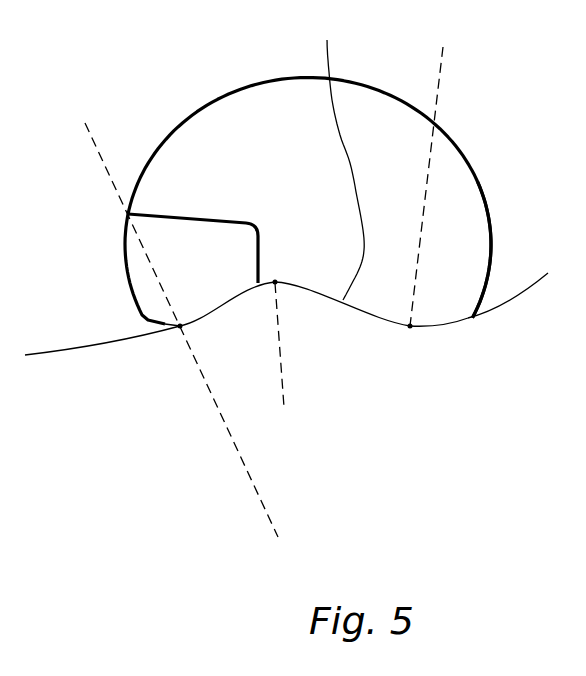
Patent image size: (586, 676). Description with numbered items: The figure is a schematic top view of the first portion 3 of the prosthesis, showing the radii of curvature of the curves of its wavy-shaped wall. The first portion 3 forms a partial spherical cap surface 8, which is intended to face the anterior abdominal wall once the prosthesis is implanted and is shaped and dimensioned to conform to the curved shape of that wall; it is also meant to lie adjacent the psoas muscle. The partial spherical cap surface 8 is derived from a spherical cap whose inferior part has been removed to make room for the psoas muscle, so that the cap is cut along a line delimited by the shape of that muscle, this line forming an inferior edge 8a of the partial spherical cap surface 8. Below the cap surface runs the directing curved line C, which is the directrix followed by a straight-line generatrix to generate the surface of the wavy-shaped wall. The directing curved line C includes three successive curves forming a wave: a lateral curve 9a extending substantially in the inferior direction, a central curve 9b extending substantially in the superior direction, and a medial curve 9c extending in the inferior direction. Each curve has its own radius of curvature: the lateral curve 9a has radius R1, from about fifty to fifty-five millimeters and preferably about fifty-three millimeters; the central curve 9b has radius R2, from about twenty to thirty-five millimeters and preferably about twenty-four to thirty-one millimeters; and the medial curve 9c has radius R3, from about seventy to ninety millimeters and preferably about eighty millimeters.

The partial spherical cap surface 8 is at (257, 127).
The inferior edge 8a is at (327, 52).
The first portion 3 is at (457, 207).
The lateral curve 9a is at (443, 330).
The central curve 9b is at (298, 287).
The medial curve 9c is at (203, 327).
The directing curved line C is at (480, 322).
The radius of curvature of the lateral curve R1 is at (442, 73).
The radius of curvature of the central curve R2 is at (284, 396).
The radius of curvature of the medial curve R3 is at (100, 150).